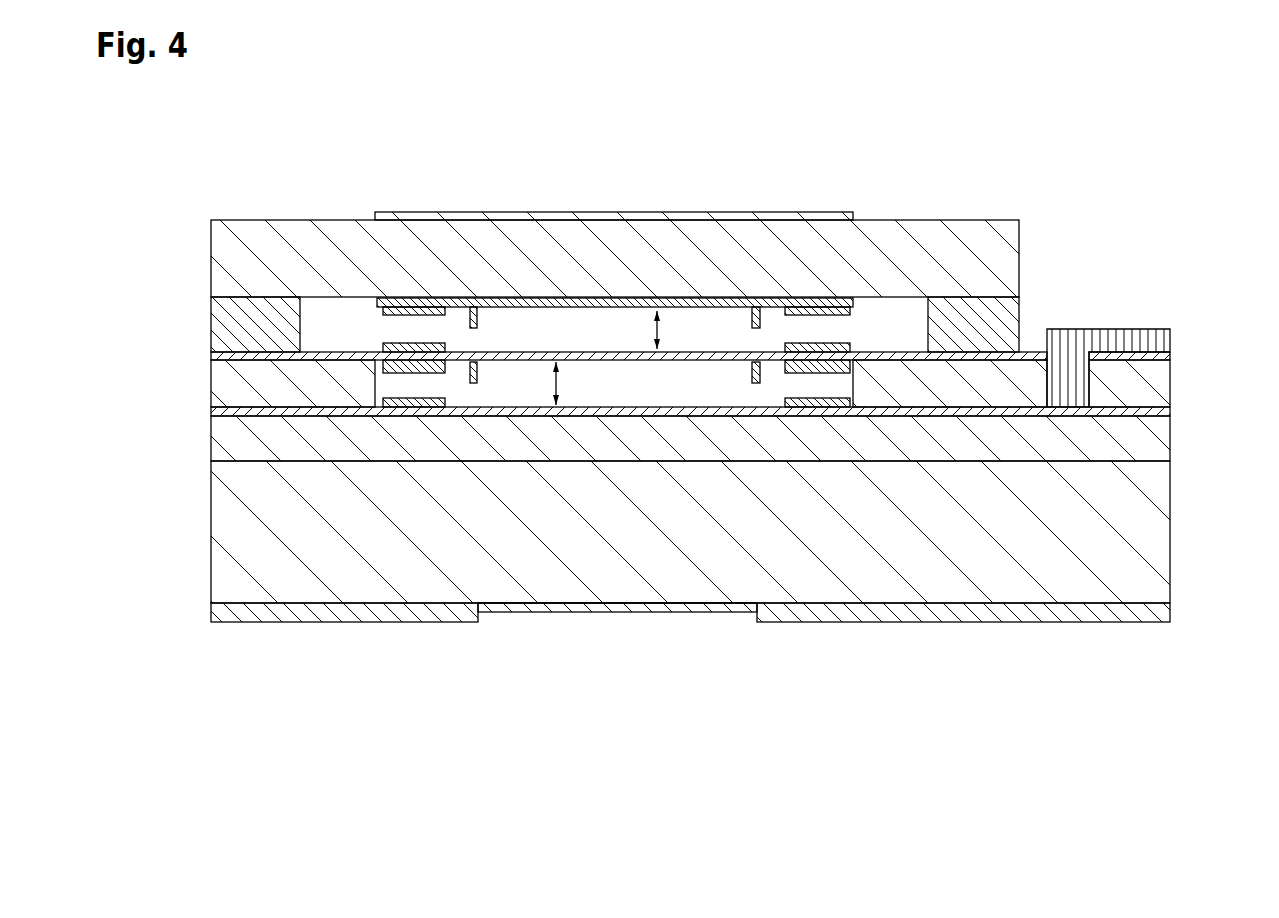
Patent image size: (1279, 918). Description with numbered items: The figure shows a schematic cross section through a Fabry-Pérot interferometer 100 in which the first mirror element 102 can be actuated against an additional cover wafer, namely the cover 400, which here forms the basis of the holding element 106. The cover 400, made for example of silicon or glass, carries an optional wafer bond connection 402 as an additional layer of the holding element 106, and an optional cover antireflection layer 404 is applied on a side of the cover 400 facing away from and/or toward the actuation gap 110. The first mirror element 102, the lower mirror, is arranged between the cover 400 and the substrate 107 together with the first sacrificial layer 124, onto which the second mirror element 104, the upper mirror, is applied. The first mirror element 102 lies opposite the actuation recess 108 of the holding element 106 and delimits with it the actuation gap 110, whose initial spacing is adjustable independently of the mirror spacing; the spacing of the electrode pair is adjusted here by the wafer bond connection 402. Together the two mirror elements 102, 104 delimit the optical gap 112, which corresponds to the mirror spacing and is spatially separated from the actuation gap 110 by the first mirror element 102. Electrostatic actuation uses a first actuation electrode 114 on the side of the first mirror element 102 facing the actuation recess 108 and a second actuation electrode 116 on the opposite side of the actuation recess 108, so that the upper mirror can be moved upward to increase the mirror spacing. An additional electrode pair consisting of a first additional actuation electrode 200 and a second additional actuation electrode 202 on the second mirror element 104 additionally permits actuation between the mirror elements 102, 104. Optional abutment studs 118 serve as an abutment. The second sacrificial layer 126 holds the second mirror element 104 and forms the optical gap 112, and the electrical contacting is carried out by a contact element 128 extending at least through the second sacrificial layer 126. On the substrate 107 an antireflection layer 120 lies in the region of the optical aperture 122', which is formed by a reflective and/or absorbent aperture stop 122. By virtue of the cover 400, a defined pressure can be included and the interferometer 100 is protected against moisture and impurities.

The interferometer 100 is at (211, 176).
The holding element 106 is at (134, 220).
The cover 400 is at (228, 244).
The wafer bond connection 402 is at (228, 328).
The cover antireflection layer 404 is at (620, 300).
The actuation recess 108 is at (902, 328).
The second actuation electrode 116 is at (433, 306).
The abutment studs 118 is at (478, 372).
The actuation gap 110 is at (660, 330).
The optical gap 112 is at (559, 383).
The first actuation electrode 114 is at (395, 343).
The first mirror element 102 is at (215, 358).
The first additional actuation electrode 200 is at (426, 373).
The second additional actuation electrode 202 is at (393, 407).
The second sacrificial layer 126 is at (225, 385).
The contact element 128 is at (1113, 338).
The second mirror element 104 is at (1160, 412).
The first sacrificial layer 124 is at (232, 438).
The substrate 107 is at (222, 558).
The aperture stop 122 is at (690, 649).
The optical aperture 122' is at (617, 649).
The antireflection layer 120 is at (627, 590).